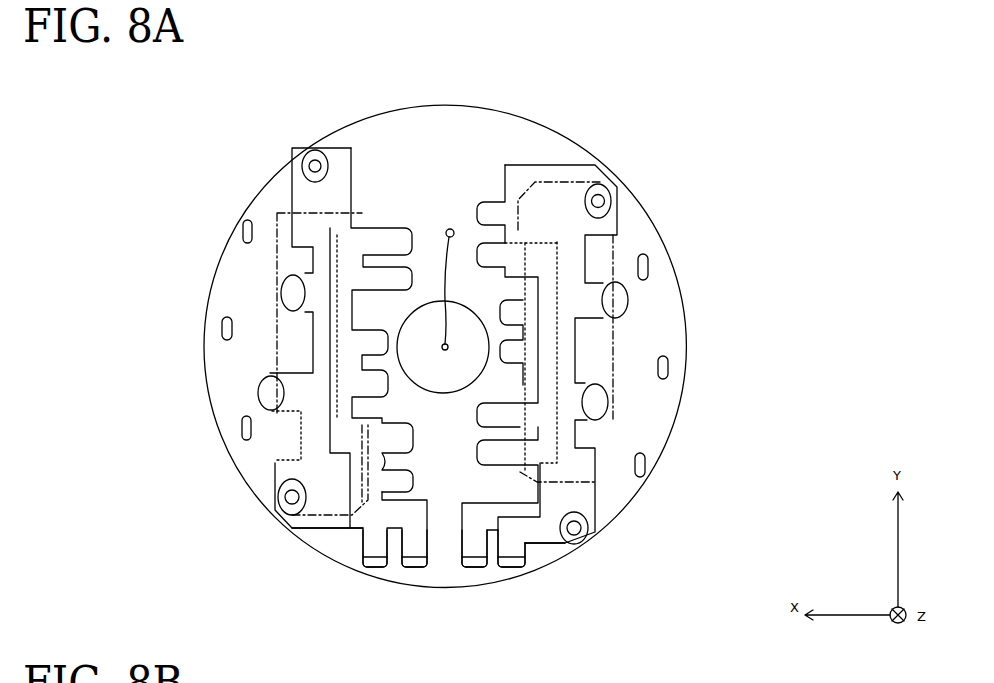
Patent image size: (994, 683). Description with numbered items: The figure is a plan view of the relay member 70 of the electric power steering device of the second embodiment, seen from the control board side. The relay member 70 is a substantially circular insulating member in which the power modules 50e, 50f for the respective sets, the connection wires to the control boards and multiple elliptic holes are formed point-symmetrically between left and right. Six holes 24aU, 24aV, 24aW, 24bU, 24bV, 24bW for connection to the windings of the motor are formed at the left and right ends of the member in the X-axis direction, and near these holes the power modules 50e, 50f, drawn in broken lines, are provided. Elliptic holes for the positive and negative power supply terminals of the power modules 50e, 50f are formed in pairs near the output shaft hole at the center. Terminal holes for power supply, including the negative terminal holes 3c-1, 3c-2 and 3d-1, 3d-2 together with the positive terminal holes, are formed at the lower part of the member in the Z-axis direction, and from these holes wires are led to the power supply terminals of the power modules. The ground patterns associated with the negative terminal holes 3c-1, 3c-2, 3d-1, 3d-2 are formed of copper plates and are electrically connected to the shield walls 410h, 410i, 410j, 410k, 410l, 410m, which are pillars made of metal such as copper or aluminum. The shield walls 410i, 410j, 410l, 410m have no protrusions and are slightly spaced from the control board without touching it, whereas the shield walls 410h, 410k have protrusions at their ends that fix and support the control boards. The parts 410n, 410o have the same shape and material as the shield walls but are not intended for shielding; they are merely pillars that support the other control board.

The power module 50f is at (355, 210).
The power module 50e is at (558, 178).
The relay member 70 is at (570, 145).
The pillar 410o is at (306, 156).
The shield wall 410h is at (608, 185).
The shield wall 410m is at (275, 282).
The shield wall 410i is at (630, 300).
The shield wall 410l is at (259, 400).
The shield wall 410j is at (612, 405).
The shield wall 410k is at (278, 500).
The pillar 410n is at (590, 530).
The hole 24bU is at (243, 231).
The hole 24bV is at (222, 328).
The hole 24bW is at (247, 440).
The hole 24aW is at (646, 255).
The hole 24aV is at (668, 365).
The hole 24aU is at (645, 470).
The terminal hole 3d-1 is at (312, 530).
The terminal hole 3d-2 is at (370, 565).
The terminal hole 3c-1 is at (518, 567).
The terminal hole 3c-2 is at (567, 547).